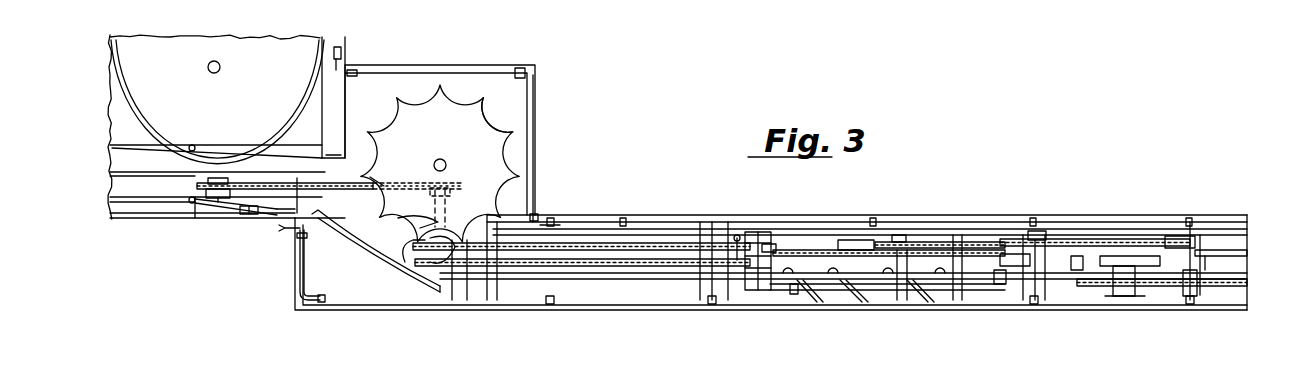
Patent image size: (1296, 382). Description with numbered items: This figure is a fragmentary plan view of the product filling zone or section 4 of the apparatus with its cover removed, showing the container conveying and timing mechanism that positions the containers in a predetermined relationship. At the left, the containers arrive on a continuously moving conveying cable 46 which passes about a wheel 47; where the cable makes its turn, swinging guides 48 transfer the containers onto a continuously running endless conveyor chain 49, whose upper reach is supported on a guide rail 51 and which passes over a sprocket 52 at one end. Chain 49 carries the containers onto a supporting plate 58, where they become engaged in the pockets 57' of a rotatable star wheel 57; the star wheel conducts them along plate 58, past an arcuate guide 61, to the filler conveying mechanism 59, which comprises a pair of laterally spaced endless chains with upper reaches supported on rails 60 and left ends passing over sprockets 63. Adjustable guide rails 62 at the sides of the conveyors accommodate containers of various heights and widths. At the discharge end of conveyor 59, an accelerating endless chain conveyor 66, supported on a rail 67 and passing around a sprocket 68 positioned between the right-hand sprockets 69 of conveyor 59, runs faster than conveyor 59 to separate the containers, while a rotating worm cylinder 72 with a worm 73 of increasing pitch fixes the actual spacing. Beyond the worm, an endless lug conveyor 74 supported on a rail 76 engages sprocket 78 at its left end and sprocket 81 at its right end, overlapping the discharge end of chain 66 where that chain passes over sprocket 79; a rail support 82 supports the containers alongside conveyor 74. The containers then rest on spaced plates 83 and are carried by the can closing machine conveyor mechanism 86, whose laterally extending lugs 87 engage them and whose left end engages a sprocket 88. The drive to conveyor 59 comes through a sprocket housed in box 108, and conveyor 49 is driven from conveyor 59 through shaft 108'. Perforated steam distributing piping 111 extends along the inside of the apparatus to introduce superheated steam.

The product filling zone or section 4 is at (697, 310).
The conveying cable 46 is at (123, 179).
The wheel 47 is at (211, 107).
The swinging guides 48 is at (302, 154).
The endless conveyor chain 49 is at (372, 176).
The guide rail 51 is at (262, 183).
The sprocket 52 is at (205, 187).
The star wheel 57 is at (440, 163).
The pockets 57' is at (500, 110).
The supporting plate 58 is at (336, 269).
The conveying mechanism 59 is at (600, 245).
The rails 60 is at (655, 243).
The arcuate guide 61 is at (377, 268).
The guide rails 62 is at (530, 283).
The sprockets 63 is at (412, 246).
The accelerating endless chain conveyor 66 is at (815, 250).
The rail 67 is at (853, 244).
The sprocket 68 is at (767, 246).
The sprockets 69 is at (747, 252).
The worm cylinder 72 is at (832, 290).
The worm 73 is at (913, 287).
The endless conveyor 74 is at (1090, 242).
The rail 76 is at (1037, 236).
The sprocket 78 is at (910, 240).
The sprocket 79 is at (1015, 258).
The sprocket 81 is at (1177, 238).
The rail support 82 is at (1000, 282).
The spaced plates 83 is at (1213, 267).
The endless chain conveyor mechanism 86 is at (1213, 293).
The lugs 87 is at (1187, 280).
The sprocket 88 is at (1097, 284).
The box 108 is at (724, 214).
The shaft 108' is at (465, 207).
The perforated steam distributing piping 111 is at (383, 297).